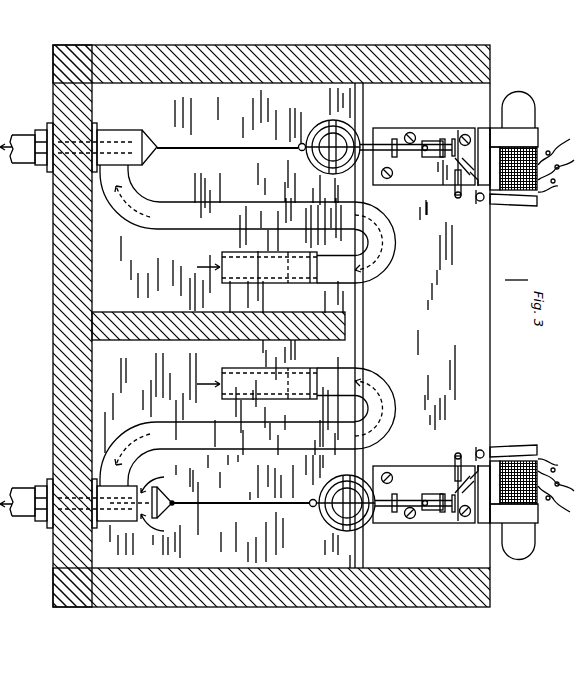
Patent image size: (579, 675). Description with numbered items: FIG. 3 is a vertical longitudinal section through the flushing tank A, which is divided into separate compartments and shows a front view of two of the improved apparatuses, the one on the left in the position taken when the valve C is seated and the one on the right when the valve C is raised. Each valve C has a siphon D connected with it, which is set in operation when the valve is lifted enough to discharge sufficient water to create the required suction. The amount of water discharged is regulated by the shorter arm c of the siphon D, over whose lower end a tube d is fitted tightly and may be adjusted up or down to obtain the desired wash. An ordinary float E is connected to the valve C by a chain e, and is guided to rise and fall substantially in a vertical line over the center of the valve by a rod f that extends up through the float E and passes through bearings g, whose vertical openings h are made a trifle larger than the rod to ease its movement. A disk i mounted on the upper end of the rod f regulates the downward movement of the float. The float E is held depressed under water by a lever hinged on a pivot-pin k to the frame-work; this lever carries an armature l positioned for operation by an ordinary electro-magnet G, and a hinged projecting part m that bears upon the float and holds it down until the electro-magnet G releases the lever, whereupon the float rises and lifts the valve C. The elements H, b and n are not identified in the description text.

The tank A is at (404, 330).
The valve C is at (90, 328).
The siphon D is at (227, 325).
The float E is at (324, 124).
The electro-magnet G is at (516, 96).
The magnet frame H is at (514, 325).
The wall b is at (573, 300).
The shorter arm of siphon c is at (315, 284).
The tube d is at (262, 284).
The chain e is at (233, 333).
The rod f is at (392, 157).
The bearings g is at (393, 138).
The vertical openings h is at (428, 156).
The disk i is at (453, 138).
The pivot-pin k is at (480, 203).
The armature l is at (515, 207).
The projecting part m is at (456, 188).
The pipe bend n is at (385, 213).